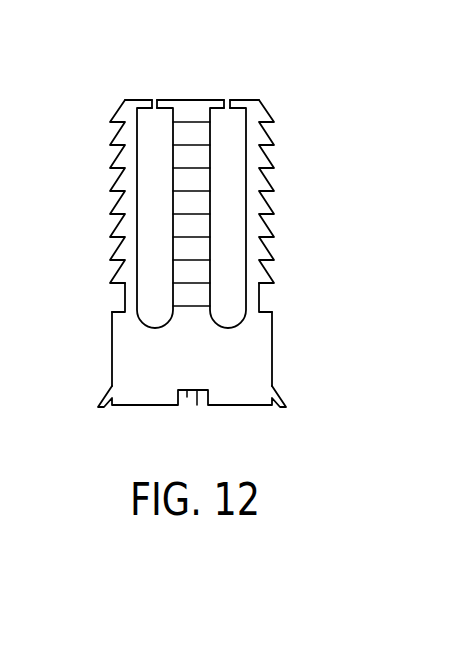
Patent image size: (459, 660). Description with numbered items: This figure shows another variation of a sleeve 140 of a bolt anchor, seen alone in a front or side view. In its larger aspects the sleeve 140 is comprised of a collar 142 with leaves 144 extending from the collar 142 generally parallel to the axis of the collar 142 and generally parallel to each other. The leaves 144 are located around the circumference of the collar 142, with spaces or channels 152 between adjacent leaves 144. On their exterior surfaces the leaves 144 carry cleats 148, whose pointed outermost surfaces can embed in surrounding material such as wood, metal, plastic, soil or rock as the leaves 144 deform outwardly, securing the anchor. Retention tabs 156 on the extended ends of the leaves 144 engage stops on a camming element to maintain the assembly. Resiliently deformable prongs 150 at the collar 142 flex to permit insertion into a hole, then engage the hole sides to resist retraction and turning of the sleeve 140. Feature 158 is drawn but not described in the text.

The sleeve 140 is at (72, 265).
The collar 142 is at (274, 347).
The leaves 144 is at (125, 101).
The cleats 148 is at (116, 203).
The resiliently deformable prongs 150 is at (190, 409).
The channels 152 is at (232, 246).
The retention tabs 156 is at (154, 106).
The shoulders 158 is at (123, 297).